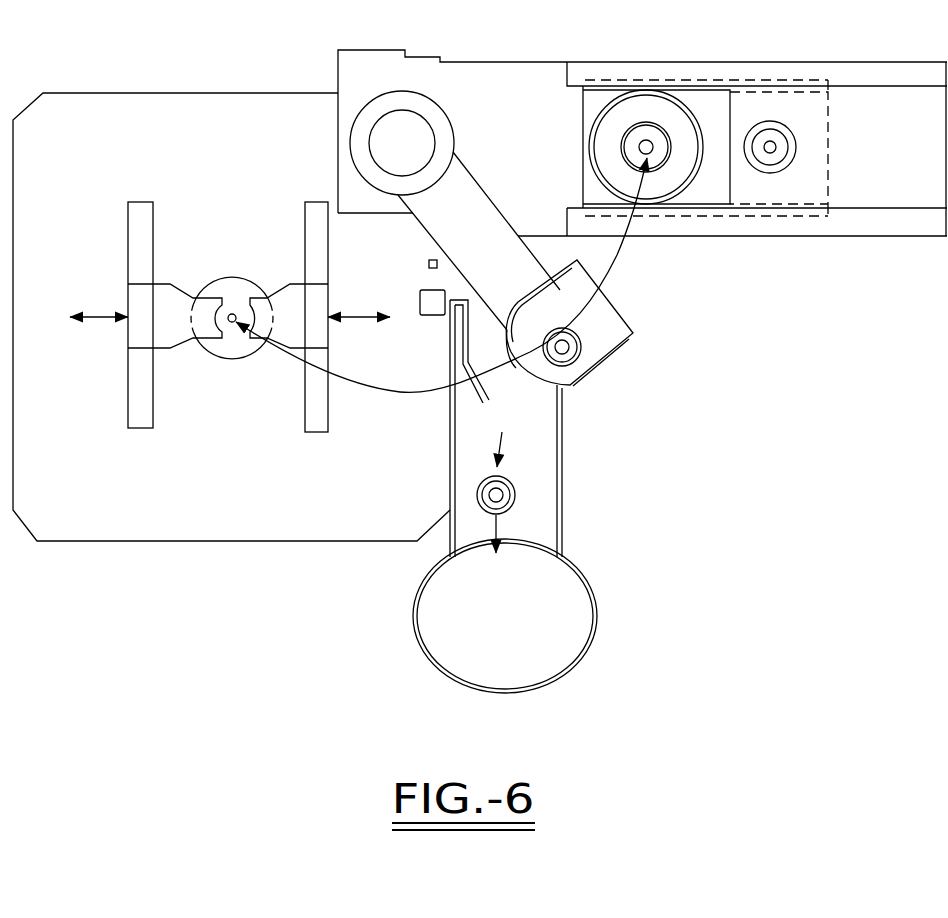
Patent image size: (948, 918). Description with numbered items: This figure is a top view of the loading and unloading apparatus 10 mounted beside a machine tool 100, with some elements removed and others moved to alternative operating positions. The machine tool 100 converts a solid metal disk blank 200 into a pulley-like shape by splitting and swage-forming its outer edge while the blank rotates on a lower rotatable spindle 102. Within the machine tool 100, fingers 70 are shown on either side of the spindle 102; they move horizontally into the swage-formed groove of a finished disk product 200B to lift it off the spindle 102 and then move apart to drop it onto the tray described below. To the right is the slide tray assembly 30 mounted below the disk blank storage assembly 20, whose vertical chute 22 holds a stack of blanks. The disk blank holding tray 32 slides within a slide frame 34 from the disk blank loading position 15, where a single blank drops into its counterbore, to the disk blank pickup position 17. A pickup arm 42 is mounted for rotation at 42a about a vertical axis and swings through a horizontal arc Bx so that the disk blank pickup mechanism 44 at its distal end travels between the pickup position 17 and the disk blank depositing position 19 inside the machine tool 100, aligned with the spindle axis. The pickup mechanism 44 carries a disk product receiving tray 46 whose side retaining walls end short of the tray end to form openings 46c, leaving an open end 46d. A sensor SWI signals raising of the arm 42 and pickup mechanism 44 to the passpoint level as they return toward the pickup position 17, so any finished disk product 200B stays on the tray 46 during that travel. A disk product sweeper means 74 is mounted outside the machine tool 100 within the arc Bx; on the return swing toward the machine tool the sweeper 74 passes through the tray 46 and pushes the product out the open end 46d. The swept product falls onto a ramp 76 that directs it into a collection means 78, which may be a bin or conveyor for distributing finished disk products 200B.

The apparatus for loading and unloading circular disk blank workpieces 10 is at (768, 402).
The disk blank loading position 15 is at (772, 141).
The disk blank pickup position 17 is at (647, 140).
The disk blank depositing position 19 is at (232, 313).
The disk blank storage assembly 20 is at (803, 148).
The vertical chute member 22 is at (794, 134).
The slide tray assembly 30 is at (845, 246).
The disk blank holding tray 32 is at (583, 158).
The slide frame 34 is at (712, 68).
The pickup arm 42 is at (446, 233).
The rotational mounting of pickup arm 42a is at (405, 143).
The disk blank pickup mechanism 44 is at (600, 368).
The disk product receiving tray 46 is at (628, 343).
The openings of product receiving tray 46c is at (508, 350).
The open end of product receiving tray 46d is at (604, 302).
The fingers 70 is at (210, 300).
The disk product sweeper means 74 is at (489, 402).
The ramp 76 is at (540, 478).
The collection means 78 is at (594, 571).
The machine tool 100 is at (210, 549).
The lower rotatable spindle means 102 is at (232, 359).
The disk blank 200 is at (772, 173).
The finished disk product 200B is at (560, 383).
The microswitch or sensor SWI is at (429, 265).
The horizontal arc Bx is at (400, 398).